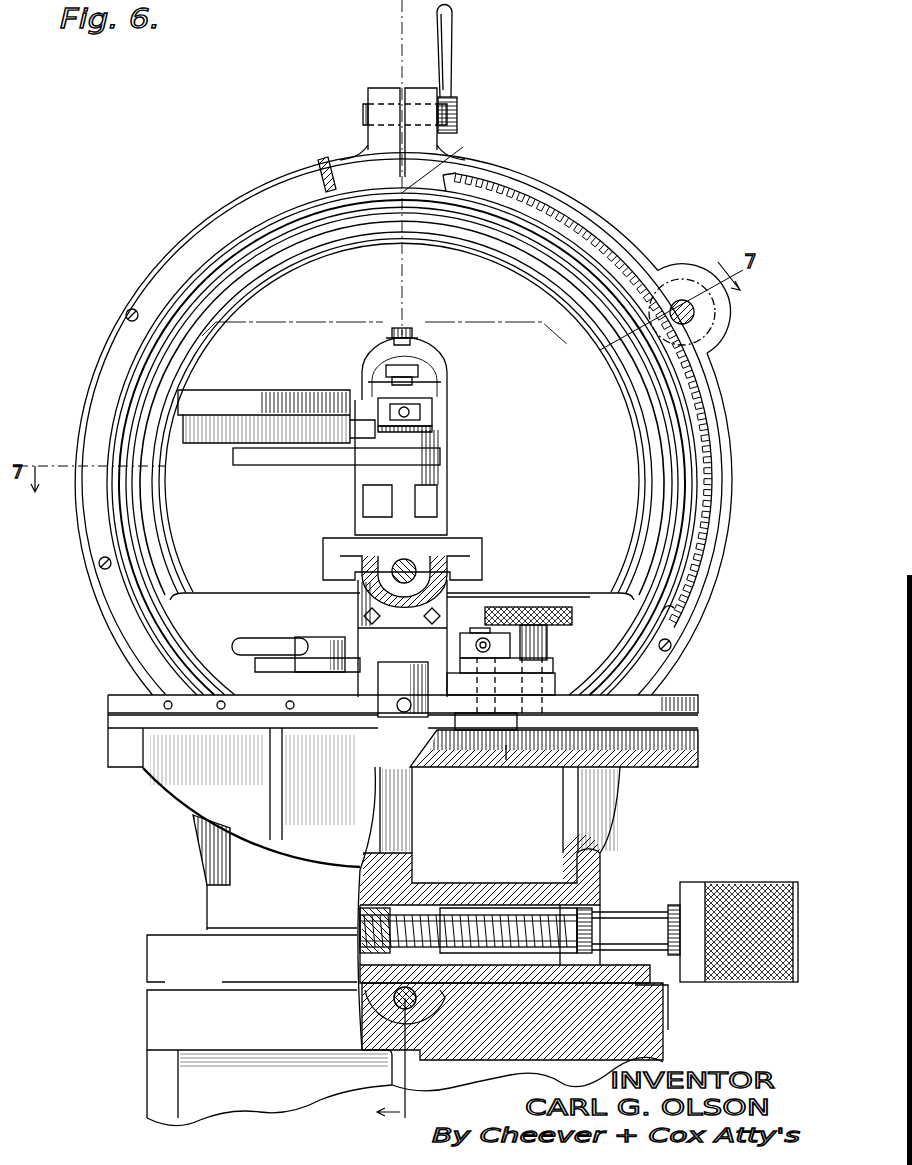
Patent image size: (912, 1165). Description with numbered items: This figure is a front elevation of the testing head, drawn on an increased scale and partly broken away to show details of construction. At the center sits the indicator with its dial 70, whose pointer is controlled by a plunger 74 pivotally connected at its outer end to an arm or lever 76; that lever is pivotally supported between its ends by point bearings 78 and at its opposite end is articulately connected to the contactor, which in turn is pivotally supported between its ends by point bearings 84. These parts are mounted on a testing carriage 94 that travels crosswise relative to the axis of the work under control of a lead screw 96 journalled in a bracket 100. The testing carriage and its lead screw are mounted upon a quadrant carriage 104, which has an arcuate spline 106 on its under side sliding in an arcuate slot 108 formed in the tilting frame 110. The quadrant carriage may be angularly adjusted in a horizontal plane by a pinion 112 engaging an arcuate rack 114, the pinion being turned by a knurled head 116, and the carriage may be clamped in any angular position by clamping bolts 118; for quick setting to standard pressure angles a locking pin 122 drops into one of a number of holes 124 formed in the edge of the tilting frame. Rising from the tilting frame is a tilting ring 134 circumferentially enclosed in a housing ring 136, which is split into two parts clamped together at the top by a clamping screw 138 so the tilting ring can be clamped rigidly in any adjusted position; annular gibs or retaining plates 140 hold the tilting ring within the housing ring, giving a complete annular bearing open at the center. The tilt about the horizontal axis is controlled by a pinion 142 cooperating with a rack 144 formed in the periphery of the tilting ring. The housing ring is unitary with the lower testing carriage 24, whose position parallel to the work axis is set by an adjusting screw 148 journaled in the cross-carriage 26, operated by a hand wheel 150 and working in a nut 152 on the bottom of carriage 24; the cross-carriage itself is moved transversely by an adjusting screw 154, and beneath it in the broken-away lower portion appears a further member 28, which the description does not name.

The testing carriage 24 is at (603, 890).
The cross-carriage 26 is at (175, 948).
The base bar 28 is at (175, 1010).
The dial 70 is at (207, 396).
The plunger 74 is at (332, 447).
The arm or lever 76 is at (420, 428).
The point bearings 78 is at (418, 410).
The point bearings 84 is at (408, 332).
The testing carriage 94 is at (335, 540).
The lead screw 96 is at (412, 560).
The bracket 100 is at (462, 597).
The quadrant carriage 104 is at (378, 645).
The arcuate spline 106 is at (553, 700).
The arcuate slot 108 is at (700, 705).
The tilting frame 110 is at (160, 775).
The pinion 112 is at (506, 762).
The arcuate rack 114 is at (700, 743).
The knurled head 116 is at (572, 610).
The clamping bolts 118 is at (478, 640).
The locking pin 122 is at (398, 710).
The holes 124 is at (170, 708).
The tilting ring 134 is at (540, 245).
The housing ring 136 is at (205, 216).
The clamping screw 138 is at (452, 112).
The annular gibs or retaining plates 140 is at (248, 198).
The pinion 142 is at (682, 302).
The rack 144 is at (718, 414).
The adjusting screw 148 is at (520, 915).
The hand wheel 150 is at (742, 893).
The nut 152 is at (365, 947).
The adjusting screw 154 is at (393, 999).